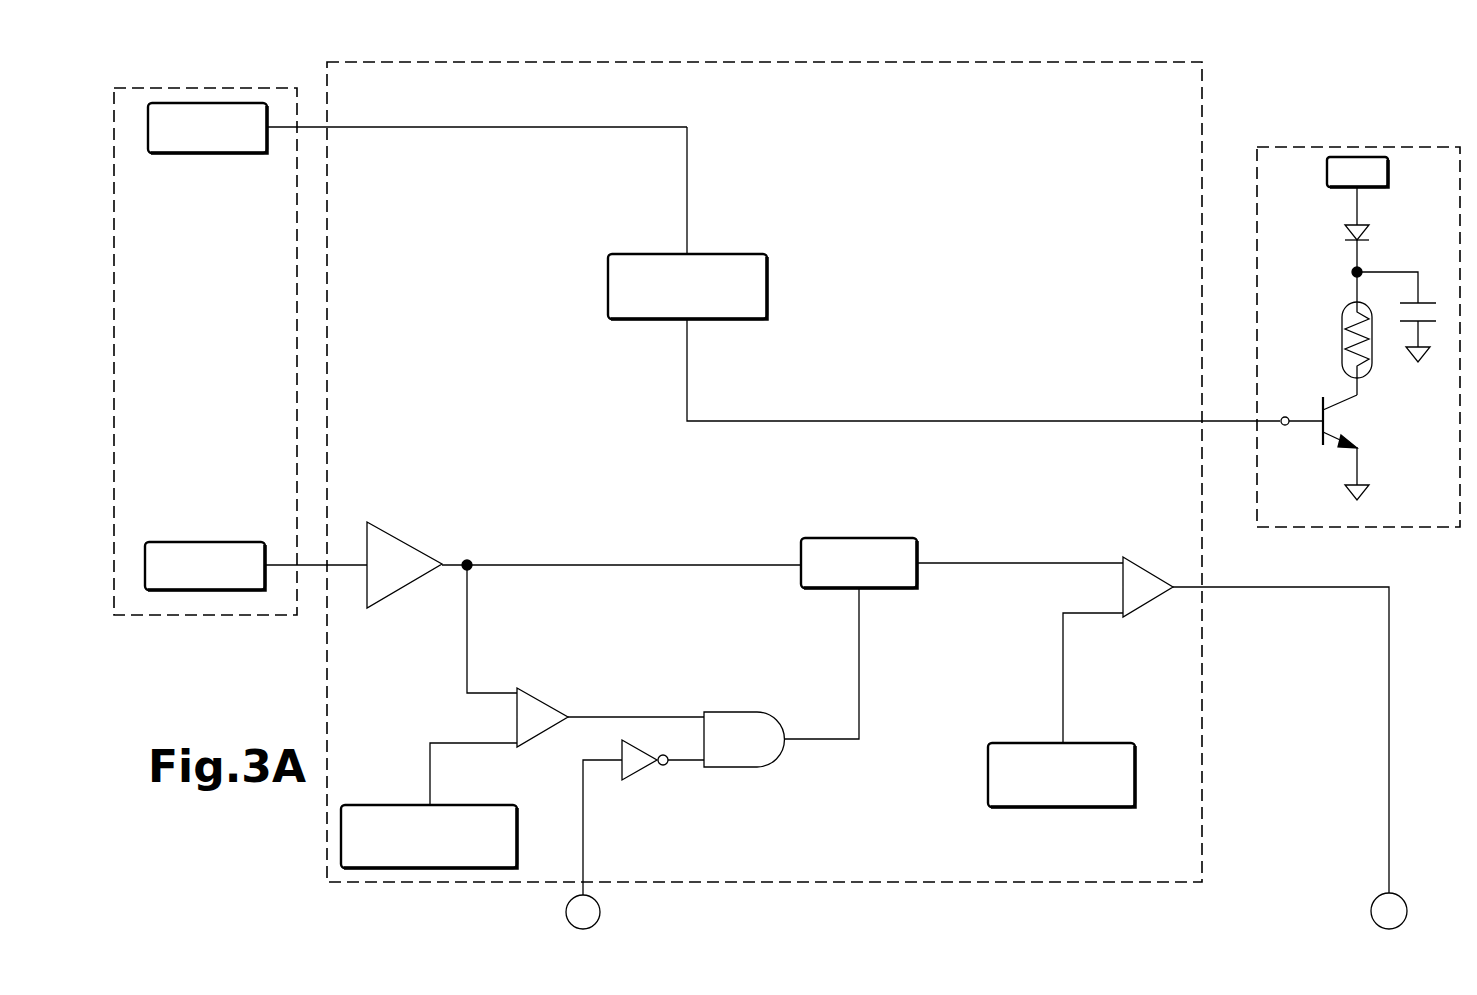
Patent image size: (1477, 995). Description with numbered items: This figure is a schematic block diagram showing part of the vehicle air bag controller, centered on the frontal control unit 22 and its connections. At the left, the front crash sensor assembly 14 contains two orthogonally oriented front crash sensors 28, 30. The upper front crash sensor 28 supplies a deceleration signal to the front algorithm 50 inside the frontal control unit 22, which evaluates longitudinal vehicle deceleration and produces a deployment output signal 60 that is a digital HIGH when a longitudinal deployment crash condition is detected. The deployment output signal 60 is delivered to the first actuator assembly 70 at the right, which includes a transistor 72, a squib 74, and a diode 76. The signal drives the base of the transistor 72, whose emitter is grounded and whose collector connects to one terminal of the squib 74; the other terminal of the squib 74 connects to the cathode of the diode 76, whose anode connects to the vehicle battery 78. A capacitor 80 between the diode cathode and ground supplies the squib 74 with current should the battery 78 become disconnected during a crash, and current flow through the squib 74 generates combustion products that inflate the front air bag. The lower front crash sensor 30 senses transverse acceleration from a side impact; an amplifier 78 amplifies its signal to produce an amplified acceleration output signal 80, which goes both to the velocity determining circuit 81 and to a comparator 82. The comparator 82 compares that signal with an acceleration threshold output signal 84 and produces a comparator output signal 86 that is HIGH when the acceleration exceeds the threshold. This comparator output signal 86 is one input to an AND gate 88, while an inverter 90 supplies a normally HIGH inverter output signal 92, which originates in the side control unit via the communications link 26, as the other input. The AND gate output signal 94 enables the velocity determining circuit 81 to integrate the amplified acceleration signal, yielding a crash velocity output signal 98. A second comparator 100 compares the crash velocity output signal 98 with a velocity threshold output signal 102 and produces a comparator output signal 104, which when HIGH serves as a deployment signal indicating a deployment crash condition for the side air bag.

The front crash sensor assembly 14 is at (230, 86).
The frontal control unit 22 is at (368, 62).
The communications link 26 is at (583, 830).
The front crash sensor 28 is at (182, 153).
The front crash sensor 30 is at (196, 542).
The front algorithm 50 is at (713, 254).
The deployment output signal 60 is at (688, 322).
The first actuator assembly 70 is at (1257, 322).
The transistor 72 is at (1323, 436).
The squib 74 is at (1373, 353).
The diode 76 is at (1345, 232).
The vehicle battery / amplifier 78 is at (1388, 162).
The capacitor / amplified acceleration output signal 80 is at (1418, 300).
The velocity determining circuit 81 is at (870, 538).
The comparator 82 is at (545, 705).
The acceleration threshold output signal 84 is at (425, 805).
The comparator output signal 86 is at (573, 717).
The AND gate 88 is at (717, 712).
The inverter 90 is at (640, 770).
The inverter output signal 92 is at (670, 762).
The AND gate output signal 94 is at (787, 740).
The crash velocity output signal 98 is at (920, 560).
The comparator 100 is at (1137, 560).
The velocity threshold output signal 102 is at (1052, 743).
The comparator output signal 104 is at (1177, 592).